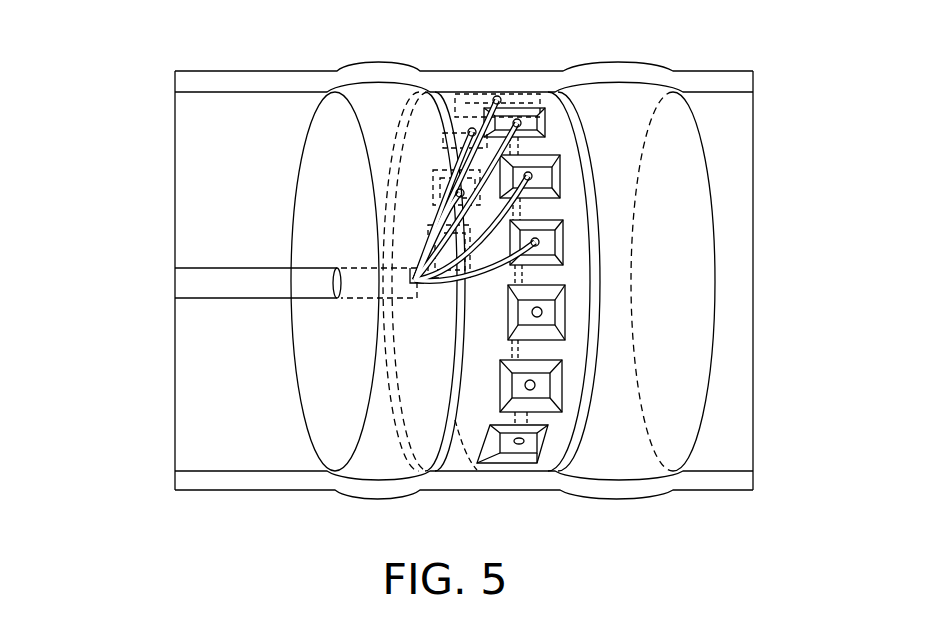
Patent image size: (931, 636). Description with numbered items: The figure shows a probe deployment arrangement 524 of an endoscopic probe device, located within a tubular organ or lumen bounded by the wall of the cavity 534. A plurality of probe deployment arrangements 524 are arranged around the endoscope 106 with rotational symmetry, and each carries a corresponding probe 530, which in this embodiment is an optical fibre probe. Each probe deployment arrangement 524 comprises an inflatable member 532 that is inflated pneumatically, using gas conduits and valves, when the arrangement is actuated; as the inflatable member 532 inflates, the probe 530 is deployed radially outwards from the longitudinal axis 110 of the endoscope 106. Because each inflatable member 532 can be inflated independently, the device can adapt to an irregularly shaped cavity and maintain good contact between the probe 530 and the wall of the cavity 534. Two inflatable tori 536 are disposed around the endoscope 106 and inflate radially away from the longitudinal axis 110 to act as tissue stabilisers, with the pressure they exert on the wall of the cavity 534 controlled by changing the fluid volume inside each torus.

The endoscope 106 is at (210, 298).
The longitudinal axis 110 is at (225, 282).
The probe deployment arrangement 524 is at (530, 443).
The probe 530 is at (541, 171).
The inflatable member 532 is at (540, 113).
The wall of the cavity 534 is at (213, 93).
The inflatable tori 536 is at (677, 350).